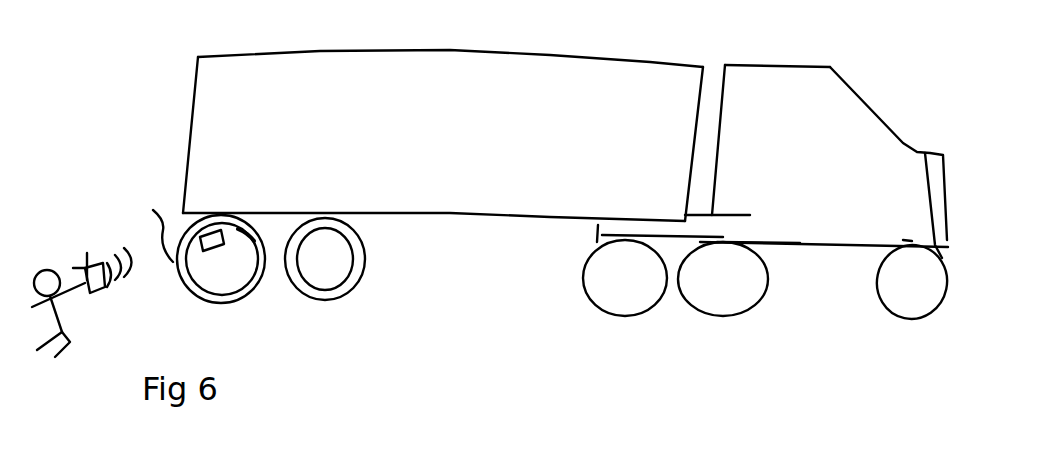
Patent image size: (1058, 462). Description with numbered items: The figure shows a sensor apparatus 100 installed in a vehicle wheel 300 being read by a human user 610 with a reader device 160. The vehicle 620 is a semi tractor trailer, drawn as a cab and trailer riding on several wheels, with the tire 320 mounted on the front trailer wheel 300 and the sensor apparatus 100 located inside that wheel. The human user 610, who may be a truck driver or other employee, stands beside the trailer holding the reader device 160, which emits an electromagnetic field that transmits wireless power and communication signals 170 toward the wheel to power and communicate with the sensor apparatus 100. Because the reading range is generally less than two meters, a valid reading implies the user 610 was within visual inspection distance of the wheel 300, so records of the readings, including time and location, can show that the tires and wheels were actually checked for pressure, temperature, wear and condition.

The vehicle 620 is at (260, 50).
The vehicle wheel 300 is at (240, 244).
The tire 320 is at (235, 224).
The sensor apparatus 100 is at (220, 244).
The human user 610 is at (43, 262).
The reader device 160 is at (87, 253).
The wireless power and communication signals 170 is at (123, 243).